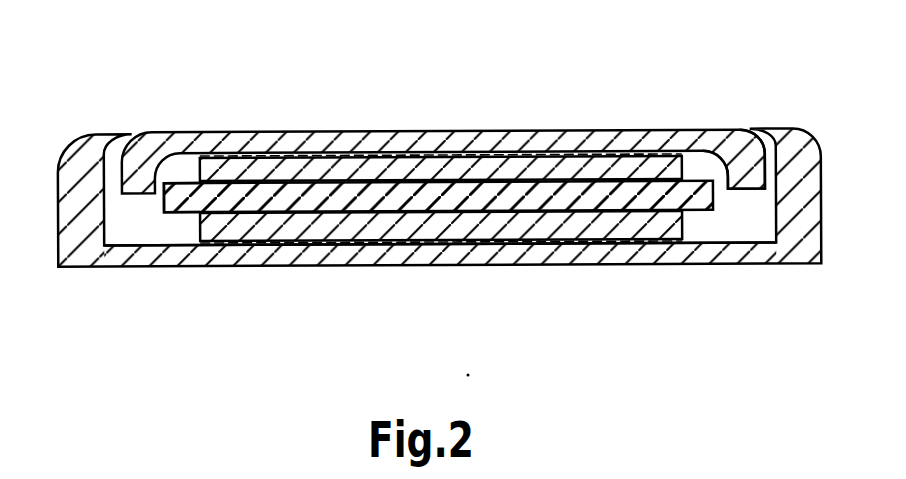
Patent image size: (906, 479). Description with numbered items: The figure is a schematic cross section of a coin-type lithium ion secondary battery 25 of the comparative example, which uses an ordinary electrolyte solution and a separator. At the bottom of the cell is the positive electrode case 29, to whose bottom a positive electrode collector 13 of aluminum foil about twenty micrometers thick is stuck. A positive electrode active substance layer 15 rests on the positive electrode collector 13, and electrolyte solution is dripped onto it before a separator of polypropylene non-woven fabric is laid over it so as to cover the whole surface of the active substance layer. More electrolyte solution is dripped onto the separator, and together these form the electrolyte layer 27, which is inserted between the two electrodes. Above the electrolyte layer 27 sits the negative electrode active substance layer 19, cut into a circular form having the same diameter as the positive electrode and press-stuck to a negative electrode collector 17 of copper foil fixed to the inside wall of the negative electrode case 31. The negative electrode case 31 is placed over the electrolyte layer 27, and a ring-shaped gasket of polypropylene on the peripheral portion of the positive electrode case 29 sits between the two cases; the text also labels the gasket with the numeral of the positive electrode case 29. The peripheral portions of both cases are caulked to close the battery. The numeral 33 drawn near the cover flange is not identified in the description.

The coin-type lithium ion secondary battery 25 is at (536, 70).
The electrolyte layer 27 is at (222, 187).
The negative electrode active substance layer 19 is at (357, 143).
The negative electrode collector 17 is at (640, 150).
The cover flange 33 is at (727, 153).
The positive electrode collector 13 is at (333, 238).
The positive electrode active substance layer 15 is at (452, 212).
The negative electrode case 31 is at (595, 255).
The positive electrode case 29 is at (760, 223).